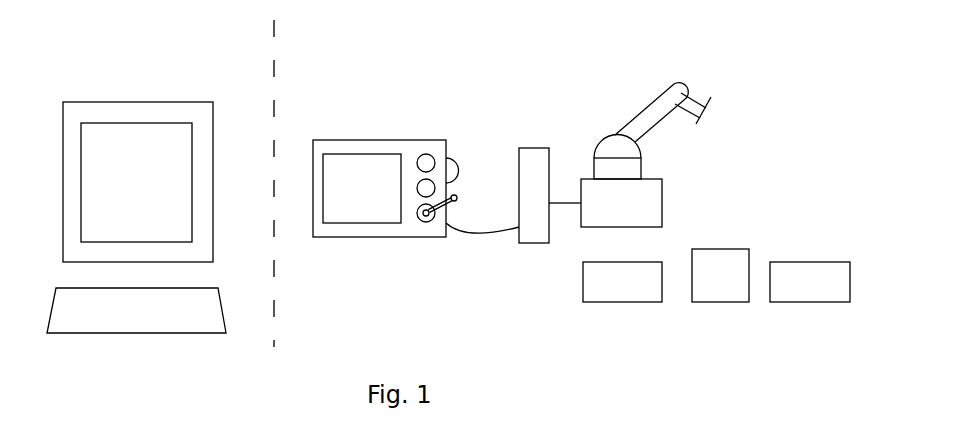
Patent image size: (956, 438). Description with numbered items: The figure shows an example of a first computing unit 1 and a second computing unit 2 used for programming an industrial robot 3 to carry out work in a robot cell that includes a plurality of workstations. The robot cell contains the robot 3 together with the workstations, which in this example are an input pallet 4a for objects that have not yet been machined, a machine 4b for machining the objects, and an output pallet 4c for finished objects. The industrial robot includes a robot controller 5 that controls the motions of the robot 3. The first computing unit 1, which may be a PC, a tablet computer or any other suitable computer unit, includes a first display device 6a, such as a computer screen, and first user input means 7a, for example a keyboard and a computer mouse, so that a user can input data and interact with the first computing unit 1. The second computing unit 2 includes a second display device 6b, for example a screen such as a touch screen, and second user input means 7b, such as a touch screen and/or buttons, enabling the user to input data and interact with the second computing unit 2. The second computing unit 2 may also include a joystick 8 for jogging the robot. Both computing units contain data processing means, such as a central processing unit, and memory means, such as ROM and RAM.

The first computing unit 1 is at (78, 79).
The first display device 6a is at (137, 155).
The first user input means 7a is at (200, 302).
The second computing unit 2 is at (378, 148).
The second display device 6b is at (340, 178).
The second user input means 7b is at (430, 184).
The joystick 8 is at (427, 216).
The robot controller 5 is at (535, 190).
The industrial robot 3 is at (614, 148).
The input pallet 4a is at (622, 290).
The machine 4b is at (721, 290).
The output pallet 4c is at (809, 290).